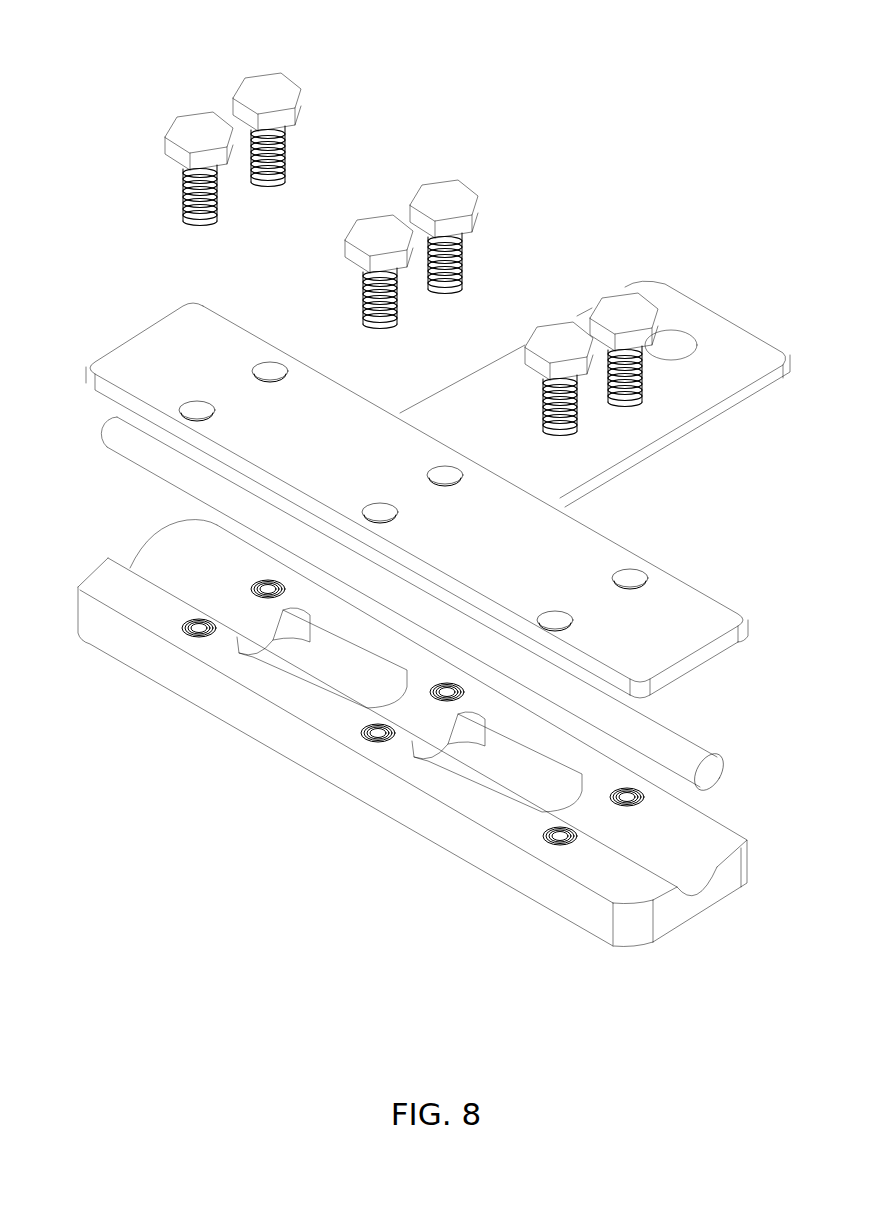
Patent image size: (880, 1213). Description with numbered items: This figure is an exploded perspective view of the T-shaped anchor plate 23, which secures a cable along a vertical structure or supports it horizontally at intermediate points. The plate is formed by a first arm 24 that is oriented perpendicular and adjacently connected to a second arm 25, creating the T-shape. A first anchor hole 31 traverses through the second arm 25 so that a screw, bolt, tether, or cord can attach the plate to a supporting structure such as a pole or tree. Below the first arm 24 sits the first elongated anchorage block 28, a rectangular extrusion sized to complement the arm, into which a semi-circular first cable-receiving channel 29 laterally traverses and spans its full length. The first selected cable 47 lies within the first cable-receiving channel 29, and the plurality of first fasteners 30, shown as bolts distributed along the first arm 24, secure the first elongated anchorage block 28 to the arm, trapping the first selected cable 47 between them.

The T-shaped anchor plate 23 is at (728, 52).
The first arm 24 is at (407, 500).
The second arm 25 is at (595, 394).
The first elongated anchorage block 28 is at (397, 733).
The first cable-receiving channel 29 is at (692, 855).
The plurality of first fasteners 30 is at (398, 241).
The first anchor hole 31 is at (684, 338).
The first selected cable 47 is at (424, 606).